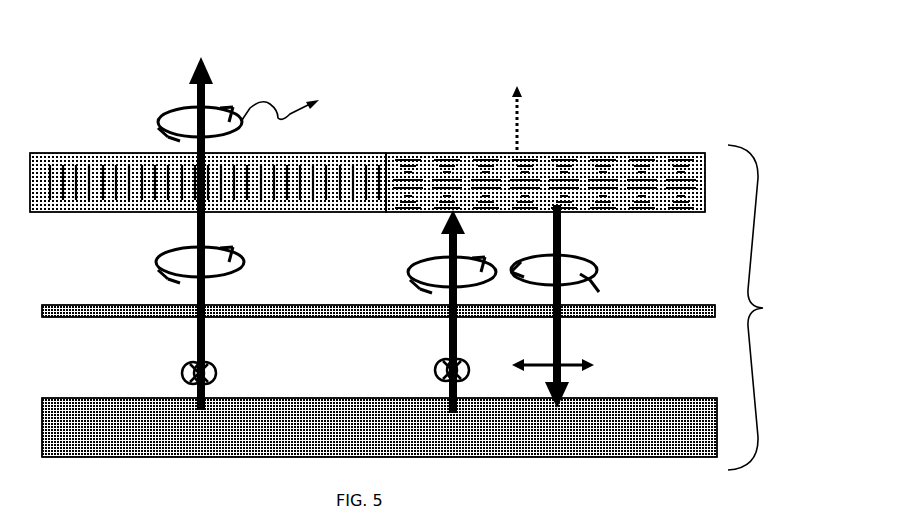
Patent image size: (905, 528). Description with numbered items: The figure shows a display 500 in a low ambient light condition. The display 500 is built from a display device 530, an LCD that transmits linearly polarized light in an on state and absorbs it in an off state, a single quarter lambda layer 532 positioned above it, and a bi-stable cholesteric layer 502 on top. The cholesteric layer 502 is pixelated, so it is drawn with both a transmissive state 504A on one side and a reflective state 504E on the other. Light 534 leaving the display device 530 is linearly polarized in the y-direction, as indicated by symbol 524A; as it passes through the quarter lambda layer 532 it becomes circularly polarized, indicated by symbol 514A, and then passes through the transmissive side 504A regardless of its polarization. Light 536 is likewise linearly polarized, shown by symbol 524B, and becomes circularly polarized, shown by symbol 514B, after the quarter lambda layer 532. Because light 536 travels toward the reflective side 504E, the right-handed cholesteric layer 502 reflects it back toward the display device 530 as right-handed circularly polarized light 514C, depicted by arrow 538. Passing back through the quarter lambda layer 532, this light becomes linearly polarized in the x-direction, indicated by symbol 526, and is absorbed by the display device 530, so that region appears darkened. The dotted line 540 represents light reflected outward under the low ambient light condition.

The display 500 is at (766, 307).
The bi-stable cholesteric (ChLCD) layer 502 is at (113, 143).
The transmissive state 504A is at (358, 153).
The reflective state 504E is at (432, 153).
The circularly polarized light symbol 514A is at (158, 252).
The circularly polarized light symbol 514B is at (407, 263).
The right handed circularly polarized light 514C is at (600, 272).
The linear polarization symbol 524A is at (182, 365).
The linear polarization symbol 524B is at (433, 365).
The x-direction linear polarization symbol 526 is at (575, 360).
The display device 530 is at (117, 395).
The quarter lambda layer 532 is at (125, 300).
The light arrow 534 is at (204, 60).
The light arrow 536 is at (446, 243).
The reflected light arrow 538 is at (550, 243).
The dotted line 540 is at (522, 117).